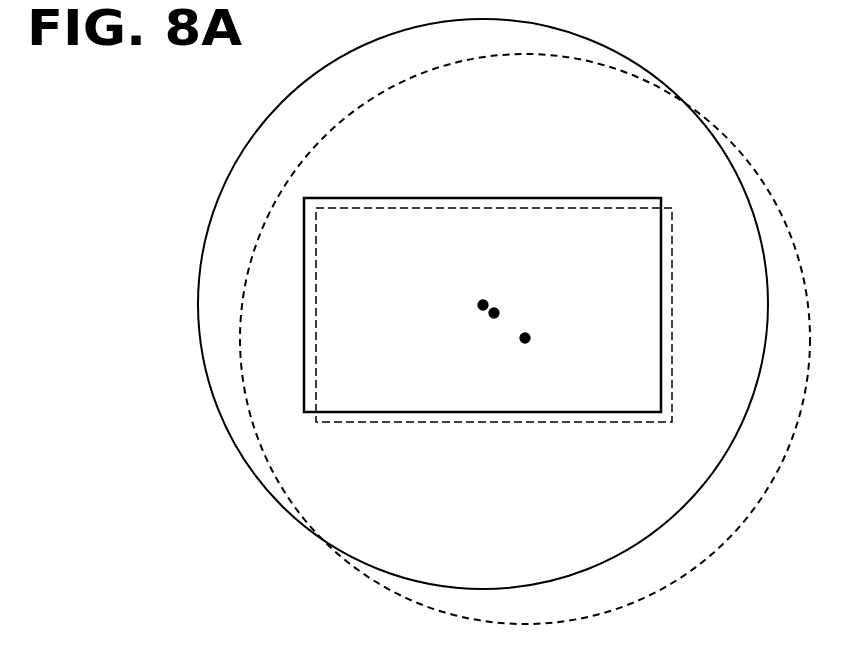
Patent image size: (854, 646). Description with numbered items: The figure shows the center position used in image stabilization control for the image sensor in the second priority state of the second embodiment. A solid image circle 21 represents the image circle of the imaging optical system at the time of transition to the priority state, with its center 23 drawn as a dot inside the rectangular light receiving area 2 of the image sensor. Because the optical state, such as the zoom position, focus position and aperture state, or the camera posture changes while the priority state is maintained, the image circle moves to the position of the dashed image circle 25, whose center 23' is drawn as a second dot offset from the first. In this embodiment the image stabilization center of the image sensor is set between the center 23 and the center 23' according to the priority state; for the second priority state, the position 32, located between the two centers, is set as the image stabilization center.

The image circle 21 is at (316, 73).
The image circle 25 is at (762, 170).
The light receiving area 2 is at (518, 198).
The center 23 is at (467, 276).
The position 32 is at (496, 309).
The center 23' is at (564, 324).